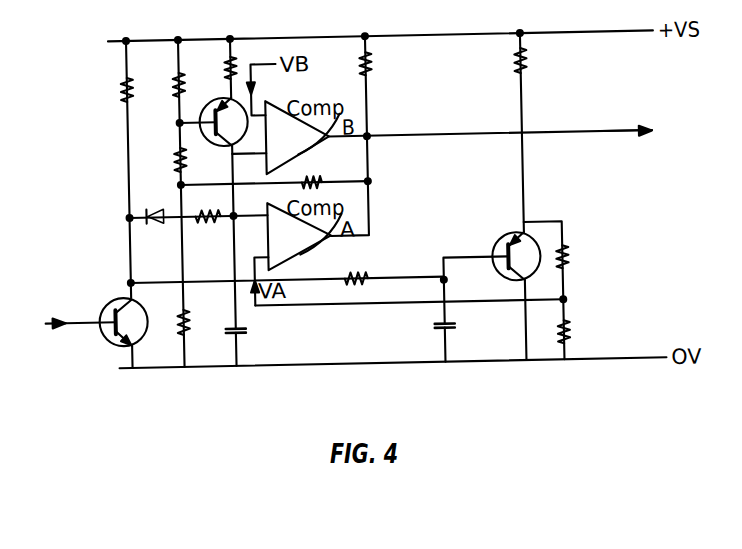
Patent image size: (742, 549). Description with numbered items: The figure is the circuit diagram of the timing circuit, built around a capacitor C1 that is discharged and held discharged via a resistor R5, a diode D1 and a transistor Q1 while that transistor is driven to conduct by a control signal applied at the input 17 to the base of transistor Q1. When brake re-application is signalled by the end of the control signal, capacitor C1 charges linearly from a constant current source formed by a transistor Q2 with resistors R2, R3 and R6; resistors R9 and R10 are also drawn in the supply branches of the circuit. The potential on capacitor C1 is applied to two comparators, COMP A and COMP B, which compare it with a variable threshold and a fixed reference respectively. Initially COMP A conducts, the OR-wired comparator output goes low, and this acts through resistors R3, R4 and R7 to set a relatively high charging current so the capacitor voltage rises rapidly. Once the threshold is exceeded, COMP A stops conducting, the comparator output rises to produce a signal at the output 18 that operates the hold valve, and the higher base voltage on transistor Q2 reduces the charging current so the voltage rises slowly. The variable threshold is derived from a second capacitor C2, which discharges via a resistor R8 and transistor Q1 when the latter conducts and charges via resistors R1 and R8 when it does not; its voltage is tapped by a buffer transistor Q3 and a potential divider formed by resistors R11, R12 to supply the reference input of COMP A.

The input 17 is at (58, 315).
The output 18 is at (642, 136).
The resistor R1 is at (115, 91).
The resistor R2 is at (164, 79).
The resistor R3 is at (166, 159).
The resistor R4 is at (197, 320).
The resistor R5 is at (205, 230).
The resistor R6 is at (215, 68).
The resistor R7 is at (312, 172).
The resistor R8 is at (353, 268).
The resistor R9 is at (380, 64).
The resistor R10 is at (502, 63).
The resistor R11 is at (579, 259).
The resistor R12 is at (582, 333).
The transistor Q1 is at (147, 311).
The transistor Q2 is at (219, 113).
The buffer transistor Q3 is at (499, 249).
The diode D1 is at (153, 229).
The capacitor C1 is at (250, 332).
The second capacitor C2 is at (432, 327).